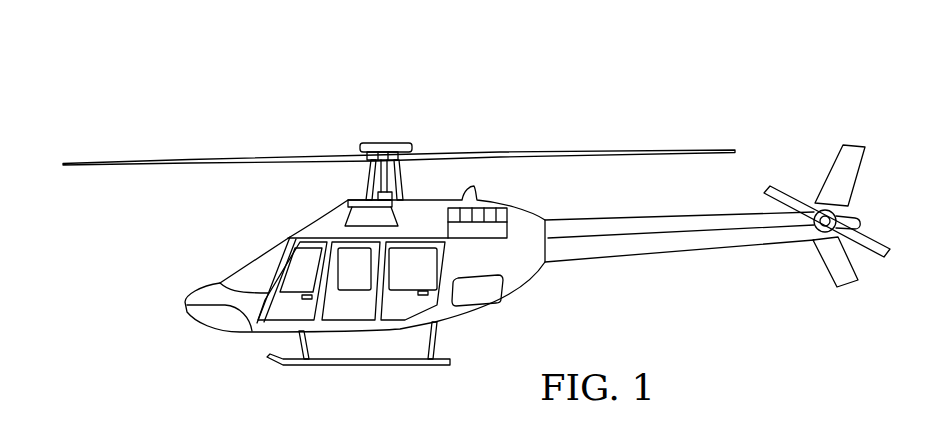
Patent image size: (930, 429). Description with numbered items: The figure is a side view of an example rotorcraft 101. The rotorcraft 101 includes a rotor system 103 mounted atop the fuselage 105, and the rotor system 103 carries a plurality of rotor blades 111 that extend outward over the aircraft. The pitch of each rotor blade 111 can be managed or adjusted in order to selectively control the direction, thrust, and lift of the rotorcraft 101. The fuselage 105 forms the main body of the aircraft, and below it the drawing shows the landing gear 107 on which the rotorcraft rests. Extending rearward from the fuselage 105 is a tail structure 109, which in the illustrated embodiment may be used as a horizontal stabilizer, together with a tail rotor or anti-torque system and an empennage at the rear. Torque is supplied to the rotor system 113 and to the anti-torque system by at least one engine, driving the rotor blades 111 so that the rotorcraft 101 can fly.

The rotorcraft 101 is at (276, 86).
The rotor system 103 is at (370, 128).
The fuselage 105 is at (223, 329).
The landing gear (skid) 107 is at (334, 367).
The tail structure 109 is at (694, 250).
The rotor blade 111 is at (566, 151).
The rotor system 113 is at (373, 178).